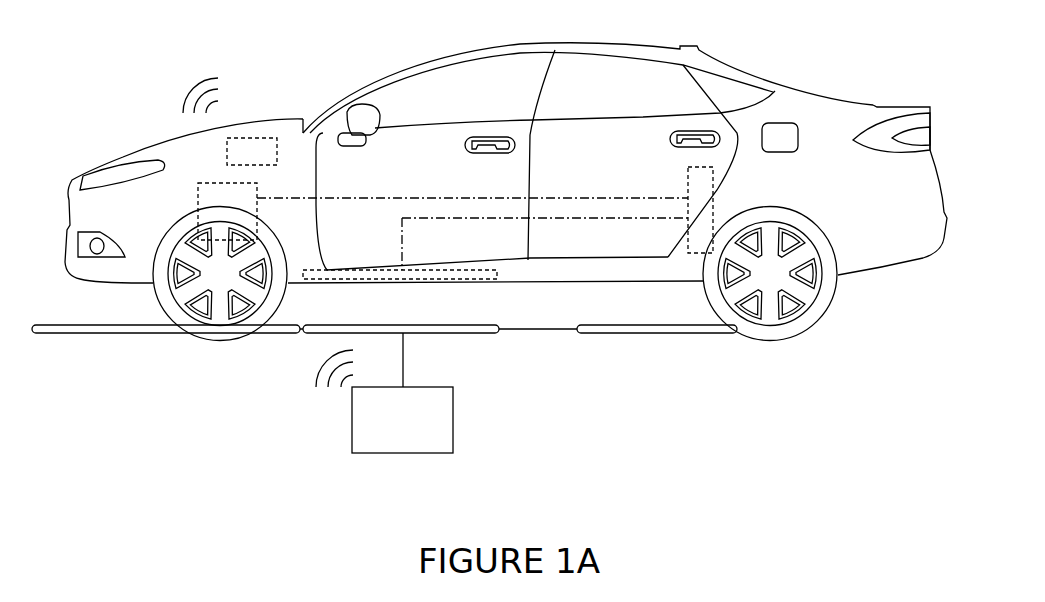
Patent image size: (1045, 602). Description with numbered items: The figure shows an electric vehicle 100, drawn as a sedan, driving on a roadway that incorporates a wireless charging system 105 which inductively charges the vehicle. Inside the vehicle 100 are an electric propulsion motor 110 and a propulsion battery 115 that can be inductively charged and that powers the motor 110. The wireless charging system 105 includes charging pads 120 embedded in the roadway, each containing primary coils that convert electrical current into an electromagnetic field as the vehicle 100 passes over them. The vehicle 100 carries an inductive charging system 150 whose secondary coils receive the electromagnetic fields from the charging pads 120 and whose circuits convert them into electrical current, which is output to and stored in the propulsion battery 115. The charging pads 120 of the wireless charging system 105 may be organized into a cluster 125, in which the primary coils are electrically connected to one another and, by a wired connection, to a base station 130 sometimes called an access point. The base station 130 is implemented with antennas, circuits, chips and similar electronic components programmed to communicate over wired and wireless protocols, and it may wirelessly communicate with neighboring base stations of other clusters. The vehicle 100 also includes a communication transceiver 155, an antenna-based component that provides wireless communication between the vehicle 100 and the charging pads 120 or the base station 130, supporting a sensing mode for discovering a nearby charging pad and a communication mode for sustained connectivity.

The electric vehicle 100 is at (561, 43).
The wireless charging system 105 is at (384, 432).
The electric propulsion motor 110 is at (200, 200).
The propulsion battery 115 is at (713, 210).
The charging pads 120 is at (130, 334).
The cluster 125 is at (290, 346).
The base station 130 is at (384, 393).
The inductive charging system 150 is at (393, 283).
The communication transceiver 155 is at (251, 138).